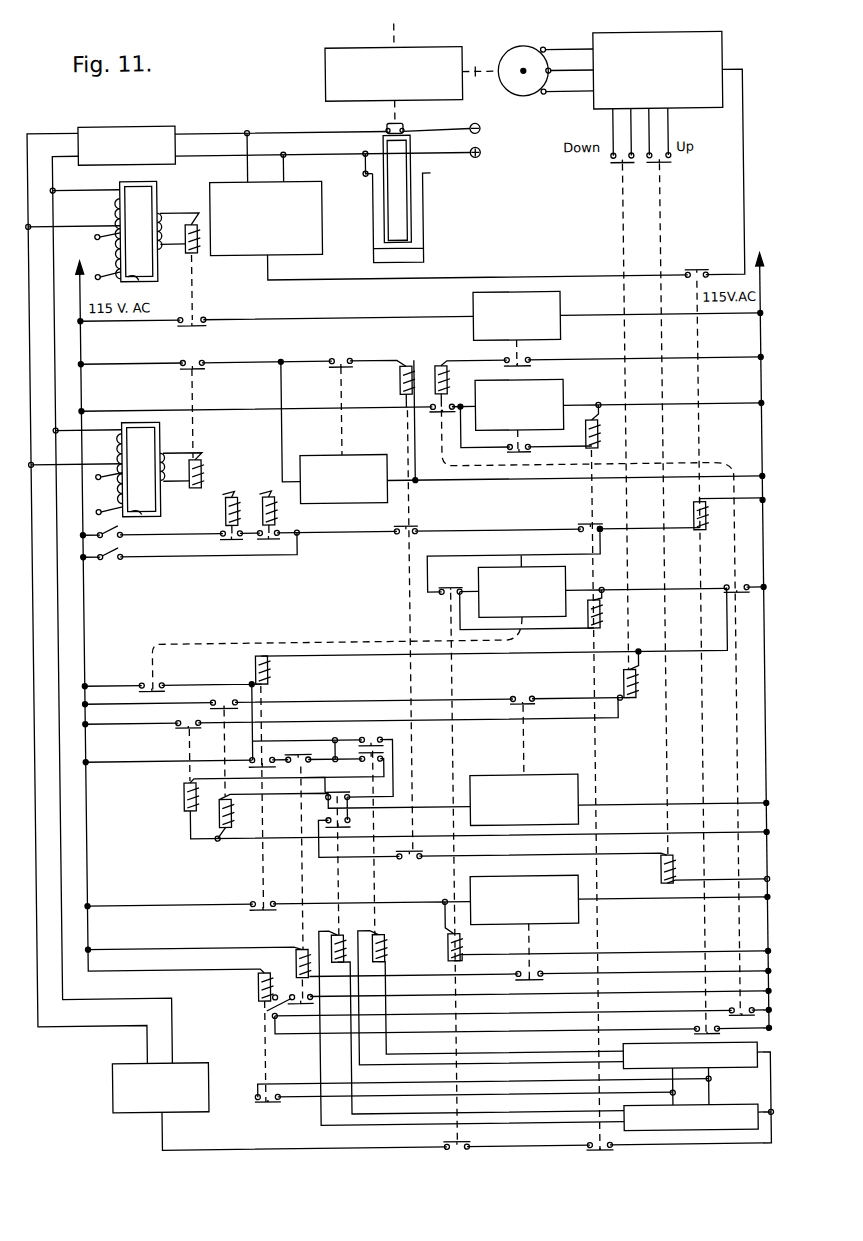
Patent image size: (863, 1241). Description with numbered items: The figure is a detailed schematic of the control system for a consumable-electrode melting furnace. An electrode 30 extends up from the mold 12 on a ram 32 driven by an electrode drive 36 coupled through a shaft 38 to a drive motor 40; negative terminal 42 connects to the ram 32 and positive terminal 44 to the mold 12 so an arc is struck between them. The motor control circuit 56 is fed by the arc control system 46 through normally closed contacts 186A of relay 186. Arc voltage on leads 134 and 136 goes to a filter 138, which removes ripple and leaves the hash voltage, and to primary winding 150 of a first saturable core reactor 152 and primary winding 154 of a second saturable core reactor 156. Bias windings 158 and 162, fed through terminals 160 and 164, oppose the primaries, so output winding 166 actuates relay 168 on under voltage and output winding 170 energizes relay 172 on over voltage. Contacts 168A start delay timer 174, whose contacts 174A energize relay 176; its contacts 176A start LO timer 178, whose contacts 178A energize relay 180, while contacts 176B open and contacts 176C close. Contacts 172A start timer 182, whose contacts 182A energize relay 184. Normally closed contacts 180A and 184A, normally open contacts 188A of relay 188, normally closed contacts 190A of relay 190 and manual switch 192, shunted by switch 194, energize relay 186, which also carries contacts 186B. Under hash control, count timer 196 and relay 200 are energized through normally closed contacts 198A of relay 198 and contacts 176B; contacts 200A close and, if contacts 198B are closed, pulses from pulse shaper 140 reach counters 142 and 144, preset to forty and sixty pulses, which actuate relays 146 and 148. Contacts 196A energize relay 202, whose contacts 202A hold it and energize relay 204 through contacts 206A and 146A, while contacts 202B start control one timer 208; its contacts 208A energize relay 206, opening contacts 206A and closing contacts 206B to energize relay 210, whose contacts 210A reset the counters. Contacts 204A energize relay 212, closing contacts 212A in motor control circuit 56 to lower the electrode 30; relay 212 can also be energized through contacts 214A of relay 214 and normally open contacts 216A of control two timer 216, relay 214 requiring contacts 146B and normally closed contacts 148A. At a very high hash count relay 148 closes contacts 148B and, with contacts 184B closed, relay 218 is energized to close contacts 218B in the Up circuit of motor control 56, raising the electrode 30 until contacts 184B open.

The mold 12 is at (428, 226).
The electrode 30 is at (417, 190).
The electrode ram carrier 32 is at (402, 111).
The electrode drive 36 is at (432, 47).
The shaft 38 is at (483, 77).
The drive motor 40 is at (539, 30).
The negative terminal 42 is at (448, 130).
The positive terminal 44 is at (442, 153).
The arc control system 46 is at (327, 216).
The motor control circuit 56 is at (672, 35).
The lead 134 is at (219, 131).
The lead 136 is at (210, 153).
The filter 138 is at (142, 123).
The pulse shaper 140 is at (107, 1084).
The counter 142 is at (710, 1071).
The counter 144 is at (712, 1108).
The relay 146 is at (380, 950).
The normally closed contacts of relay 146 146A is at (384, 760).
The normally open contacts of relay 146 146B is at (382, 741).
The relay 148 is at (326, 933).
The normally closed contacts of relay 148 148A is at (307, 791).
The normally open contacts of relay 148 148B is at (348, 822).
The primary winding 150 is at (120, 203).
The first saturable core reactor 152 is at (152, 180).
The primary winding 154 is at (124, 447).
The second saturable core reactor 156 is at (146, 419).
The bias winding 158 is at (143, 278).
The input terminals 160 is at (102, 256).
The bias winding 162 is at (147, 508).
The terminals 164 is at (103, 494).
The output winding 166 is at (163, 212).
The relay 168 is at (199, 252).
The contacts of relay 168 168A is at (196, 317).
The output winding 170 is at (163, 482).
The relay 172 is at (204, 463).
The normally open contacts of relay 172 172A is at (196, 360).
The delay timer 174 is at (477, 298).
The contacts of delay timer 174 174A is at (521, 360).
The relay 176 is at (440, 365).
The contacts of relay 176 176A is at (437, 412).
The normally closed contacts of relay 176 176B is at (731, 588).
The contacts of relay 176 176C is at (730, 1010).
The LO timer 178 is at (566, 383).
The contacts of LO timer 178 178A is at (515, 452).
The relay 180 is at (590, 450).
The normally closed contacts of relay 180 180A is at (588, 526).
The timer 182 is at (346, 502).
The contacts of timer 182 182A is at (344, 360).
The relay 184 is at (403, 386).
The normally closed contacts of relay 184 184A is at (410, 526).
The normally closed contacts of relay 184 184B is at (418, 856).
The relay 186 is at (701, 505).
The normally closed contacts of relay 186 186A is at (693, 273).
The relay contact 186B is at (694, 1030).
The relay 188 is at (278, 515).
The normally open contacts of relay 188 188A is at (295, 537).
The relay 190 is at (235, 494).
The normally closed contacts of relay 190 190A is at (234, 537).
The manually operated switch 192 is at (121, 535).
The manually operated switch 194 is at (112, 558).
The count timer 196 is at (522, 556).
The normally open contacts of count timer 196 196A is at (148, 680).
The relay 198 is at (458, 942).
The normally closed contacts of relay 198 198A is at (468, 574).
The contacts of relay 198 198B is at (440, 1143).
The relay 200 is at (590, 630).
The normally open contacts of relay 200 200A is at (588, 1146).
The relay 202 is at (268, 666).
The normally open contacts of relay 202 202A is at (262, 757).
The normally open contacts of relay 202 202B is at (256, 898).
The relay 204 is at (182, 792).
The normally open contacts of relay 204 204A is at (178, 727).
The relay 206 is at (292, 970).
The normally closed contacts of relay 206 206A is at (302, 760).
The contacts of relay 206 206B is at (268, 1003).
The control one timer 208 is at (522, 877).
The contacts of control one timer 208 208A is at (536, 975).
The relay 210 is at (254, 982).
The contacts of relay 210 210A is at (262, 1102).
The relay 212 is at (623, 705).
The contacts of relay 212 212A is at (620, 167).
The relay 214 is at (222, 826).
The contacts of relay 214 214A is at (226, 700).
The control two timer 216 is at (525, 776).
The normally open contacts of control two timer 216 216A is at (524, 698).
The relay 218 is at (658, 872).
The up relay contact 218B is at (673, 167).